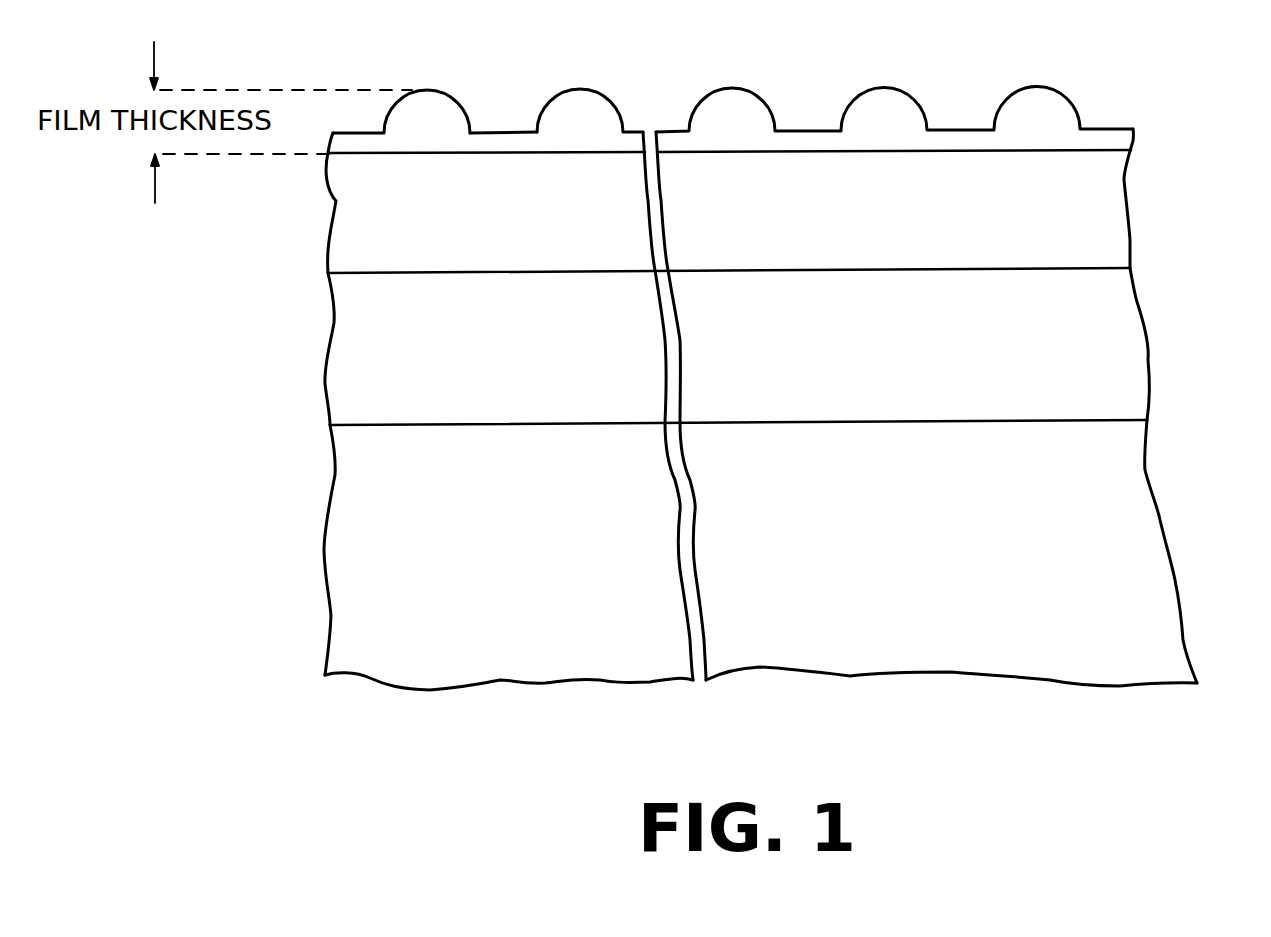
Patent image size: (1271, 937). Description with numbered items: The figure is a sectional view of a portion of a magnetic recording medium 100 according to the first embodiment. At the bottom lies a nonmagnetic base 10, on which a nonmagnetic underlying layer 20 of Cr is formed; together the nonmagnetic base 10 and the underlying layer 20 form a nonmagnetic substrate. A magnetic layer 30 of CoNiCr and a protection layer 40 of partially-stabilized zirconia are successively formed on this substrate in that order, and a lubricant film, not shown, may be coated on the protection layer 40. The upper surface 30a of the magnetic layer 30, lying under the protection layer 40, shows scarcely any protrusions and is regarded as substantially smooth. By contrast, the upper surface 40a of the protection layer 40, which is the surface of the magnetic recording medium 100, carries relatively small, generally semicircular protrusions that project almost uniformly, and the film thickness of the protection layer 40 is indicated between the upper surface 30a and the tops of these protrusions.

The nonmagnetic base 10 is at (1178, 587).
The nonmagnetic underlying layer 20 is at (1150, 397).
The magnetic layer 30 is at (1130, 218).
The upper surface of the magnetic layer 30a is at (350, 152).
The protection layer 40 is at (1136, 139).
The upper surface of the protection layer 40a is at (503, 130).
The magnetic recording medium 100 is at (1080, 693).